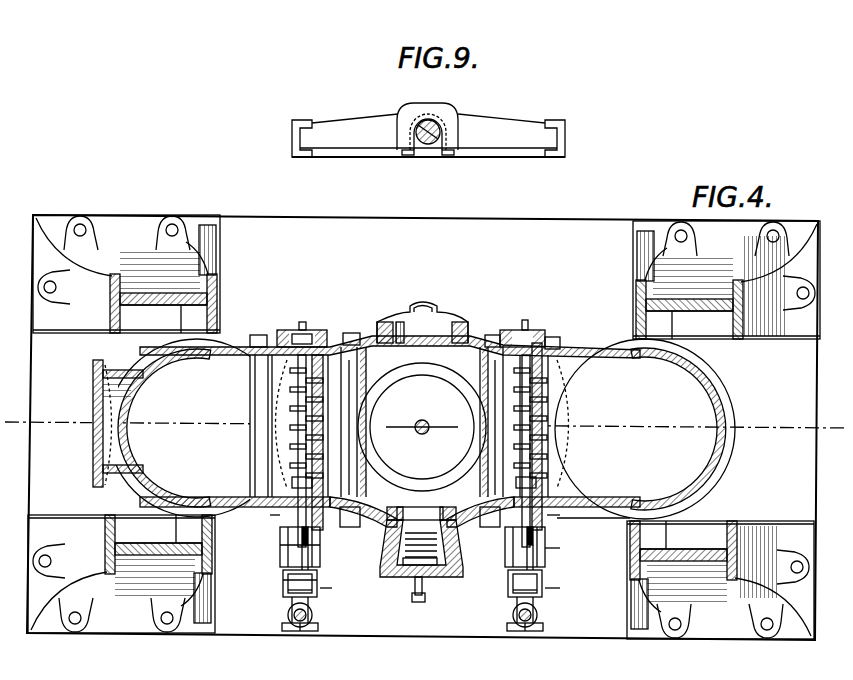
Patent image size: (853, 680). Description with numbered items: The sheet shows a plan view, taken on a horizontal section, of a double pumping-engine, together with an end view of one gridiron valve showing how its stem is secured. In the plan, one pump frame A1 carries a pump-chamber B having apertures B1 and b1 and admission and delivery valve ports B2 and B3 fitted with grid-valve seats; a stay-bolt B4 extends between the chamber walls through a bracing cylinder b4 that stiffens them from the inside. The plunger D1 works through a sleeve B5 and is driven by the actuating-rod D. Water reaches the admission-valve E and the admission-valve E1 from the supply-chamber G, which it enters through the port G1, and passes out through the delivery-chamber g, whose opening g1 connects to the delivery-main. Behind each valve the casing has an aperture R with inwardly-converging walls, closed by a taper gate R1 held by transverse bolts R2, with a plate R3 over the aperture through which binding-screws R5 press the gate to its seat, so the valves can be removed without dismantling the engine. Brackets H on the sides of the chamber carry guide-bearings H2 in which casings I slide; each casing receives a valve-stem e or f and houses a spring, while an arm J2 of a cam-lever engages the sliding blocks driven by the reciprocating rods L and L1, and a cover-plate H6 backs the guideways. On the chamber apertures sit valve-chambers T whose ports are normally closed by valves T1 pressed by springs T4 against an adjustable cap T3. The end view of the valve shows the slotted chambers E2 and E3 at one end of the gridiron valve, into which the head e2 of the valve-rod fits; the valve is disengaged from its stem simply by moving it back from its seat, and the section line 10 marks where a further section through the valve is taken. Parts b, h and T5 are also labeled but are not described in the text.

In FIG. 9, the section line 10 is at (428, 185).
In FIG. 9, the valve-stem e is at (416, 123).
In FIG. 4, the valve-stem e is at (560, 547).
In FIG. 9, the admission-valve E is at (523, 157).
In FIG. 4, the admission-valve E is at (299, 451).
In FIG. 9, the slotted chamber E2 is at (445, 118).
In FIG. 9, the slotted chamber E3 is at (440, 141).
In FIG. 9, the valve-rod head e2 is at (425, 150).
In FIG. 4, the pump frame A1 is at (90, 565).
In FIG. 4, the delivery-chamber g is at (189, 428).
In FIG. 4, the delivery-main opening g1 is at (95, 445).
In FIG. 4, the supply-chamber G is at (645, 429).
In FIG. 4, the supply port G1 is at (600, 535).
In FIG. 4, the pump-chamber B is at (430, 425).
In FIG. 4, the aperture B1 is at (390, 505).
In FIG. 4, the admission-valve port B2 is at (548, 378).
In FIG. 4, the delivery-valve port B3 is at (341, 422).
In FIG. 4, the stay-bolt B4 is at (345, 527).
In FIG. 4, the sleeve B5 is at (422, 427).
In FIG. 4, the wall b is at (348, 427).
In FIG. 4, the aperture b1 is at (422, 335).
In FIG. 4, the bracing cylinder b4 is at (496, 427).
In FIG. 4, the actuating-rod D is at (428, 424).
In FIG. 4, the plunger D1 is at (422, 408).
In FIG. 4, the aperture R is at (305, 330).
In FIG. 4, the taper gate R1 is at (530, 330).
In FIG. 4, the transverse bolts R2 is at (262, 335).
In FIG. 4, the plate R3 is at (350, 333).
In FIG. 4, the binding-screws R5 is at (303, 322).
In FIG. 4, the admission-valve E1 is at (523, 445).
In FIG. 4, the bracket H is at (300, 631).
In FIG. 4, the guide-bearing H2 is at (412, 579).
In FIG. 4, the cover-plate H6 is at (525, 631).
In FIG. 4, the valve-stem f is at (281, 545).
In FIG. 4, the pin h is at (283, 578).
In FIG. 4, the casing I is at (288, 590).
In FIG. 4, the cam-lever arm J2 is at (448, 592).
In FIG. 4, the reciprocating rod L is at (535, 623).
In FIG. 4, the reciprocating rod L1 is at (294, 623).
In FIG. 4, the valve-chamber T is at (388, 560).
In FIG. 4, the valve T1 is at (440, 548).
In FIG. 4, the adjustable cap T3 is at (418, 588).
In FIG. 4, the spring T4 is at (413, 608).
In FIG. 4, the valve disk T5 is at (395, 560).